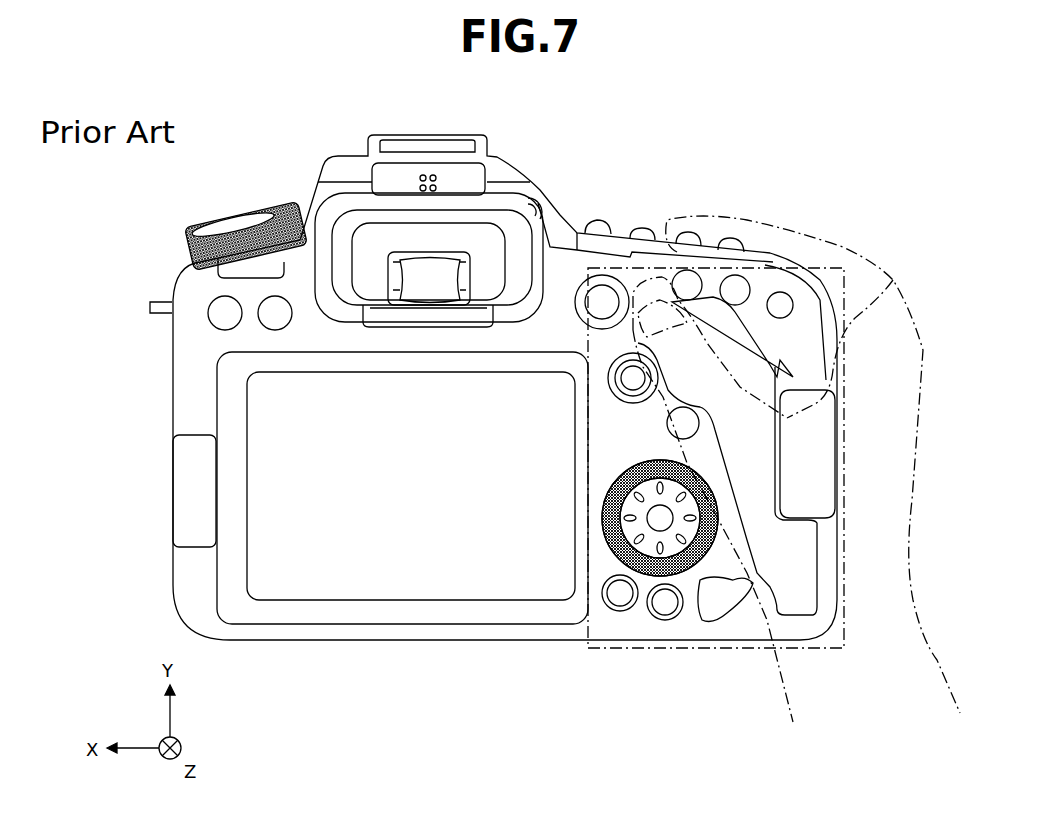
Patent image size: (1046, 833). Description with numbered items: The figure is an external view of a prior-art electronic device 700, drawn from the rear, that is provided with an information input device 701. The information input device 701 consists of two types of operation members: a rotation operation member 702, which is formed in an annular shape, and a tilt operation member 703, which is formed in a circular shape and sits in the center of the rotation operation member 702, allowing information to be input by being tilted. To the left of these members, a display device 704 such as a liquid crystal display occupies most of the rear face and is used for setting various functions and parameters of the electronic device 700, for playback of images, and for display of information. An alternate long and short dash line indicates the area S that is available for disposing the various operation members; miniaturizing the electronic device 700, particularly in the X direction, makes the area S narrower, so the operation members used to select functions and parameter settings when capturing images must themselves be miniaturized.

The electronic device 700 is at (636, 188).
The information input device 701 is at (757, 718).
The rotation operation member 702 is at (647, 573).
The tilt operation member 703 is at (677, 573).
The display device 704 is at (493, 572).
The area available to dispose various operation members S is at (893, 280).